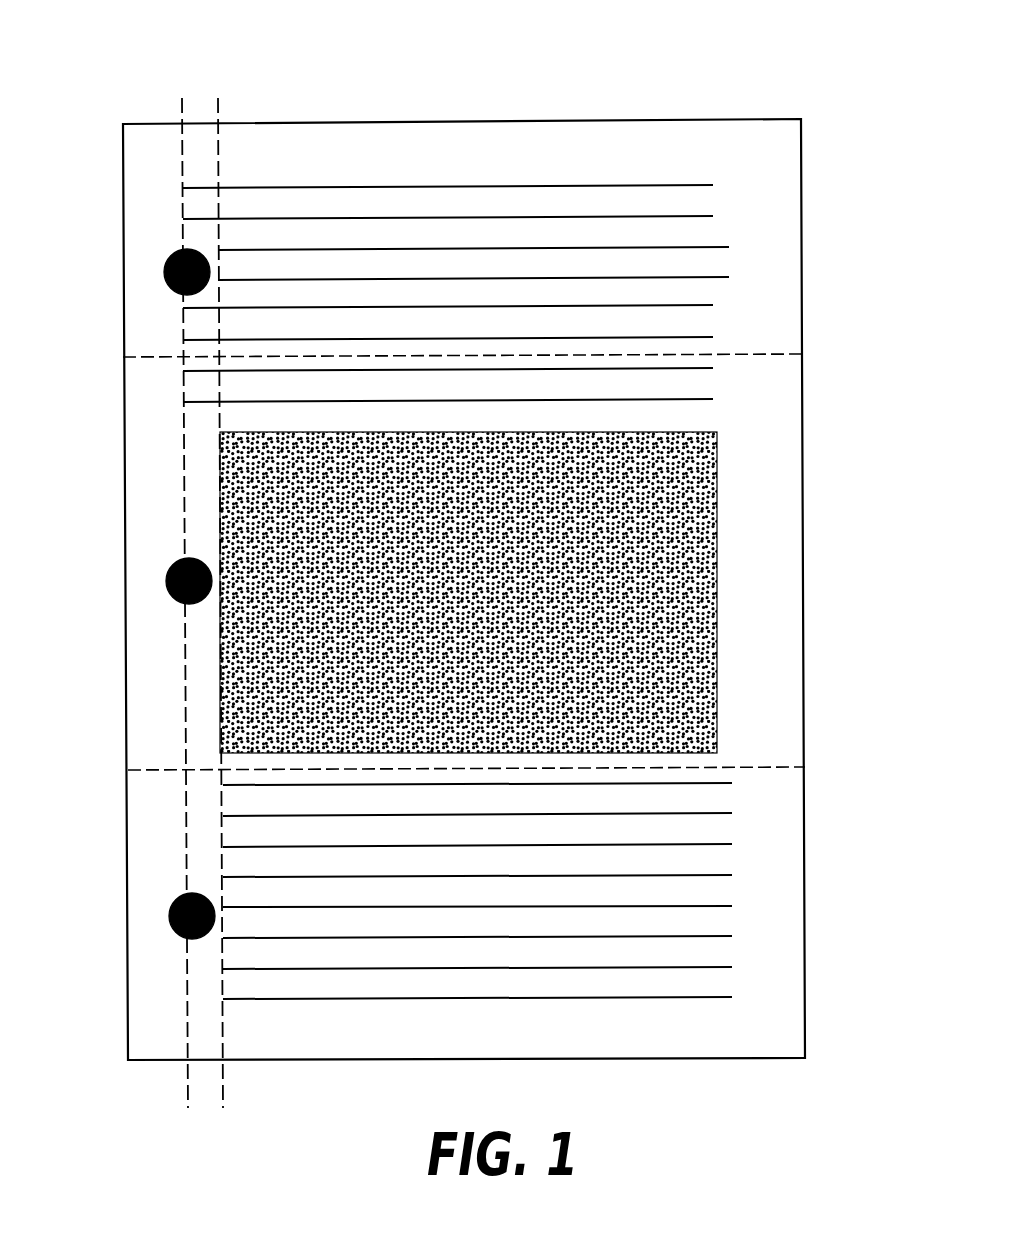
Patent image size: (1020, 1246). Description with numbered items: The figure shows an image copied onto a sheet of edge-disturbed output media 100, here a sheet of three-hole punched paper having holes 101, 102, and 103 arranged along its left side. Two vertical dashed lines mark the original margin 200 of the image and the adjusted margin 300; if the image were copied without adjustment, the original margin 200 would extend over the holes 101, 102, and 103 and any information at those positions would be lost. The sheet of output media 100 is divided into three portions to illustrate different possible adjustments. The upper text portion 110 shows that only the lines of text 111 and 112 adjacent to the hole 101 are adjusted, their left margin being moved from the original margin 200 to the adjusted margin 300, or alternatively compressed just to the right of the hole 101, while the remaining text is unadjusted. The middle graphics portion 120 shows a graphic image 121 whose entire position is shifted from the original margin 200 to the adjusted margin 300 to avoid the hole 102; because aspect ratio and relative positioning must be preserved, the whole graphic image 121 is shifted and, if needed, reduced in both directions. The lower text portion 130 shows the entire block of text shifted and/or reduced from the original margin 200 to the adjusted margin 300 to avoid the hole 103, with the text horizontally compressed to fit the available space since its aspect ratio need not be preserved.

The sheet of edge-disturbed output media 100 is at (557, 120).
The hole 101 is at (164, 270).
The hole 102 is at (166, 578).
The hole 103 is at (169, 914).
The text portion 110 is at (748, 195).
The line of text 111 is at (732, 246).
The line of text 112 is at (732, 280).
The graphics portion 120 is at (567, 592).
The graphic image 121 is at (636, 526).
The text portion 130 is at (728, 892).
The original margin 200 is at (182, 98).
The adjusted margin 300 is at (218, 98).